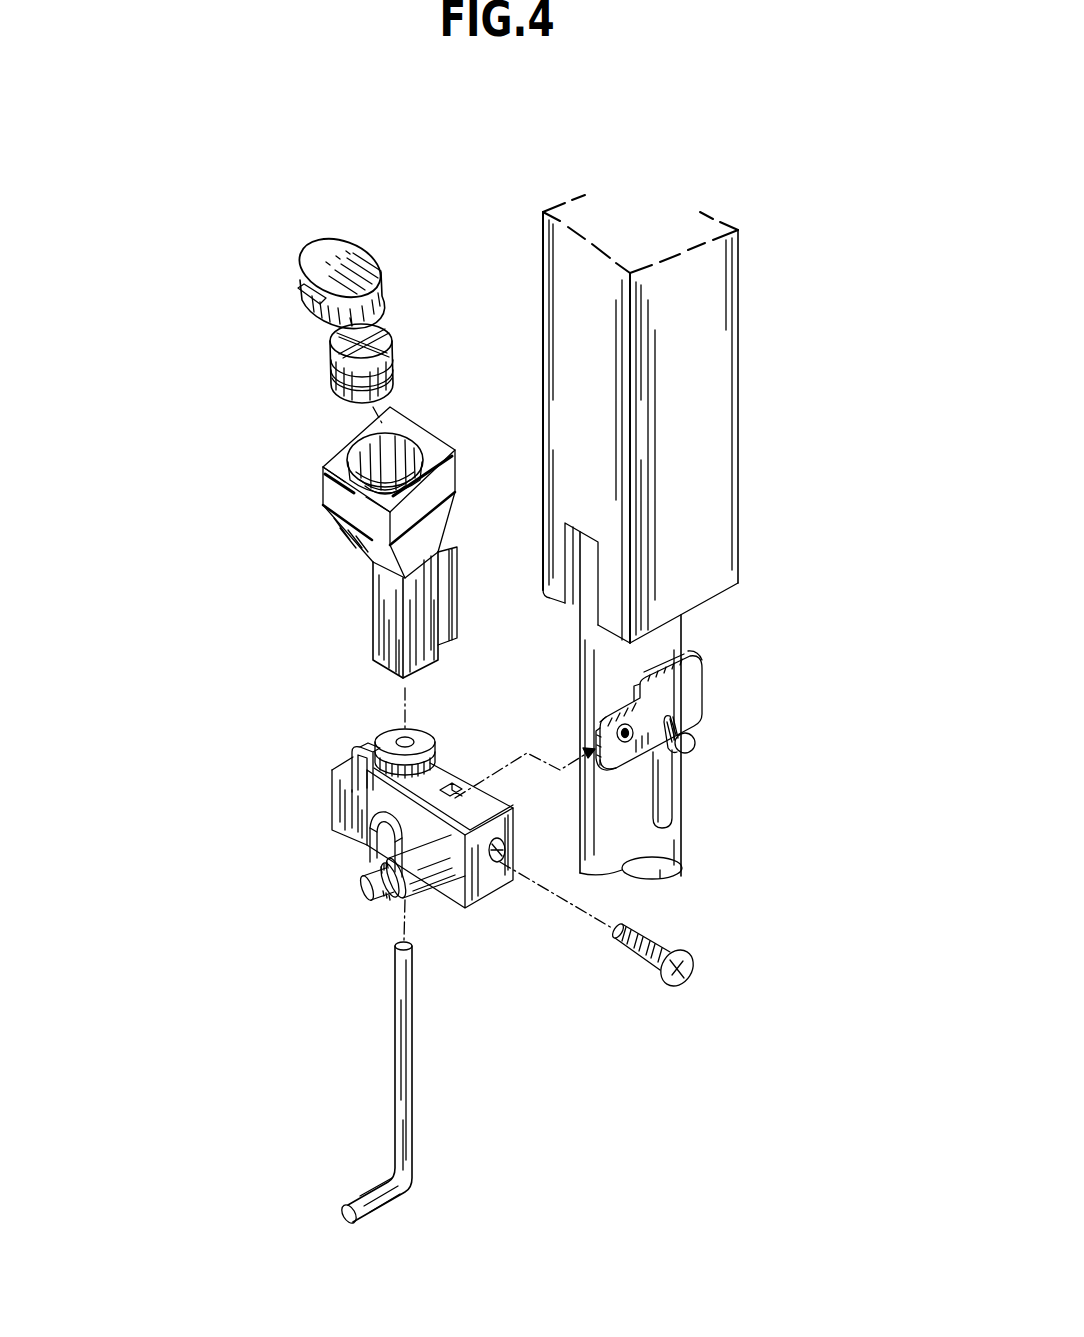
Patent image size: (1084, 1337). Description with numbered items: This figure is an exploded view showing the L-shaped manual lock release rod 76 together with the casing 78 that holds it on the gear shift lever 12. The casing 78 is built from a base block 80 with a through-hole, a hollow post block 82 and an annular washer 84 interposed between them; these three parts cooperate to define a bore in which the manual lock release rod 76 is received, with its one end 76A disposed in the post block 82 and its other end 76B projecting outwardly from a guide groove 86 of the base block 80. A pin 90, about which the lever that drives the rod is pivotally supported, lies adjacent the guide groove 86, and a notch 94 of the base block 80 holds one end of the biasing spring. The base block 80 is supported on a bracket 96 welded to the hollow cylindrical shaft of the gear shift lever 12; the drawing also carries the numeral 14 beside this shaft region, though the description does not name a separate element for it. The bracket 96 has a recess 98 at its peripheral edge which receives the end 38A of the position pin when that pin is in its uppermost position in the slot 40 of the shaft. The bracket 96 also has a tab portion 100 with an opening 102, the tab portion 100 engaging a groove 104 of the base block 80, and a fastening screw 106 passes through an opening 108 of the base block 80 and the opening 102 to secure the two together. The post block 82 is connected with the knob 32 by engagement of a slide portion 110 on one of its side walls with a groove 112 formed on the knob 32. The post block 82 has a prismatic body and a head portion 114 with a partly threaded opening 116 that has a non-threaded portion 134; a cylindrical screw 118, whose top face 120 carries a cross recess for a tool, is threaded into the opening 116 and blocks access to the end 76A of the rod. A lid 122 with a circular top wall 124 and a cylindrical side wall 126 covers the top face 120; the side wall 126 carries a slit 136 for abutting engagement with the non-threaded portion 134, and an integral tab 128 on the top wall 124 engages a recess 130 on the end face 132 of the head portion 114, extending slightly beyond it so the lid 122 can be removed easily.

The gear shift lever 12 is at (757, 205).
The knob 32 is at (715, 310).
The groove 112 is at (586, 562).
The rod 14 is at (668, 628).
The slot 40 is at (668, 798).
The tab portion 100 is at (617, 770).
The bracket 96 is at (700, 682).
The recess 98 is at (702, 712).
The opening 102 is at (606, 721).
The end of position pin 38A is at (696, 743).
The fastening screw 106 is at (692, 958).
The casing 78 is at (330, 588).
The lid 122 is at (330, 240).
The circular top wall 124 is at (347, 250).
The cylindrical side wall 126 is at (383, 312).
The tab 128 is at (300, 298).
The top face 120 is at (330, 358).
The slit 136 is at (393, 357).
The screw 118 is at (385, 402).
The head portion 114 is at (445, 475).
The end face 132 is at (423, 437).
The opening 116 is at (398, 412).
The non-threaded portion 134 is at (368, 450).
The recess 130 is at (342, 493).
The slide portion 110 is at (452, 600).
The hollow post block 82 is at (372, 625).
The base block 80 is at (332, 800).
The notch 94 is at (350, 748).
The annular washer 84 is at (378, 726).
The groove 104 is at (455, 792).
The guide groove 86 is at (372, 838).
The pin 90 is at (420, 880).
The opening 108 is at (502, 858).
The manual lock release rod 76 is at (412, 1075).
The end of manual lock release rod 76A is at (400, 962).
The other end of manual lock release rod 76B is at (373, 1207).